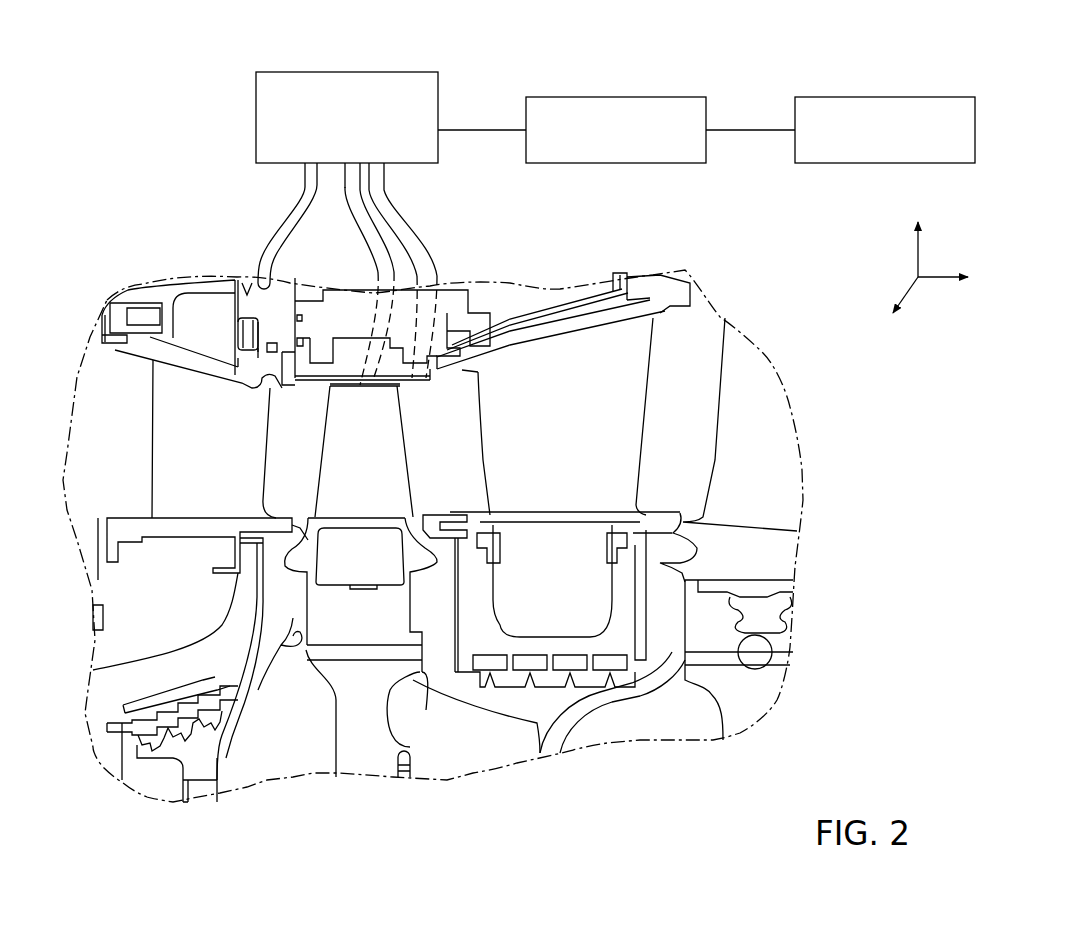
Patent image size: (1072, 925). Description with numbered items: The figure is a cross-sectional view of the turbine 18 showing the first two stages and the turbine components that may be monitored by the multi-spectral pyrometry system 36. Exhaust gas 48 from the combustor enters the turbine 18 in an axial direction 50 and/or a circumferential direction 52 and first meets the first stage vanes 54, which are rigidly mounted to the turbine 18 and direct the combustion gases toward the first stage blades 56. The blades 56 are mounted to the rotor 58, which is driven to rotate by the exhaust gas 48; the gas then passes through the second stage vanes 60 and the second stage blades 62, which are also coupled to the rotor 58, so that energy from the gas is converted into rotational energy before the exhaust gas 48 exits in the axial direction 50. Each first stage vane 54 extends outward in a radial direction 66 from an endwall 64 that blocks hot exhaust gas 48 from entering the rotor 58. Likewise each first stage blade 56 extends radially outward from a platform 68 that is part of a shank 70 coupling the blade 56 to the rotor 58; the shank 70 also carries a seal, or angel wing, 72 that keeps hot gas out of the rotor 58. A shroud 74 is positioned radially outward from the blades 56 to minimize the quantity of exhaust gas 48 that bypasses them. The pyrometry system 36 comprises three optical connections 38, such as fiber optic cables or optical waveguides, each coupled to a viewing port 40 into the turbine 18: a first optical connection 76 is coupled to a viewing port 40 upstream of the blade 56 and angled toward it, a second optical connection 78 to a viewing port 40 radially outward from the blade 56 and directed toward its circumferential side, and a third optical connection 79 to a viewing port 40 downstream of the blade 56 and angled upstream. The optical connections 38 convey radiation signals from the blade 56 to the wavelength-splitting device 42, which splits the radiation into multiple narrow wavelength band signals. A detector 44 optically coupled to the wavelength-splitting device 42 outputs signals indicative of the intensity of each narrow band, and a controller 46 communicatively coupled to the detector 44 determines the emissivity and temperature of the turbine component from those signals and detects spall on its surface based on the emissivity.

The turbine 18 is at (536, 312).
The multi-spectral pyrometry system 36 is at (788, 49).
The optical connection 38 is at (347, 208).
The viewing port 40 is at (262, 386).
The wavelength-splitting device 42 is at (256, 113).
The detector 44 is at (653, 164).
The controller 46 is at (976, 130).
The exhaust gas 48 is at (137, 438).
The axial direction 50 is at (948, 283).
The circumferential direction 52 is at (906, 293).
The first stage vanes 54 is at (192, 452).
The first stage blades 56 is at (330, 457).
The rotor 58 is at (346, 632).
The second stage vanes 60 is at (552, 426).
The second stage blades 62 is at (747, 453).
The endwall 64 is at (280, 503).
The radial direction 66 is at (920, 241).
The platform 68 is at (390, 510).
The shank 70 is at (330, 553).
The seal (angel wing) 72 is at (423, 513).
The shroud 74 is at (346, 368).
The first optical connection 76 is at (262, 240).
The second optical connection 78 is at (363, 227).
The third optical connection 79 is at (428, 247).